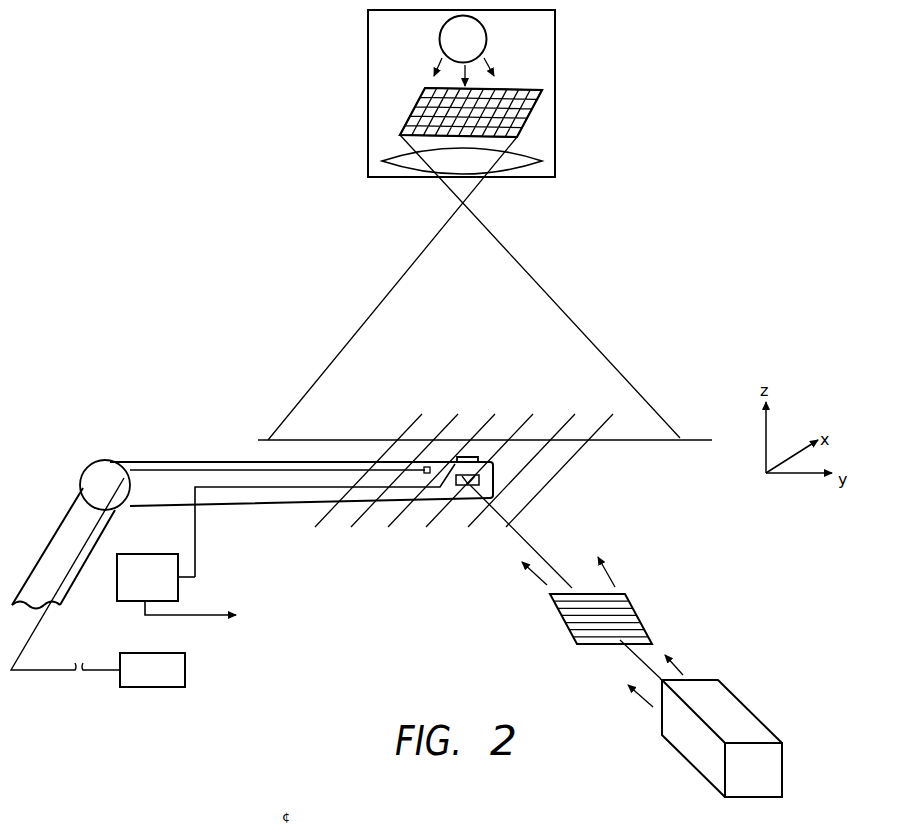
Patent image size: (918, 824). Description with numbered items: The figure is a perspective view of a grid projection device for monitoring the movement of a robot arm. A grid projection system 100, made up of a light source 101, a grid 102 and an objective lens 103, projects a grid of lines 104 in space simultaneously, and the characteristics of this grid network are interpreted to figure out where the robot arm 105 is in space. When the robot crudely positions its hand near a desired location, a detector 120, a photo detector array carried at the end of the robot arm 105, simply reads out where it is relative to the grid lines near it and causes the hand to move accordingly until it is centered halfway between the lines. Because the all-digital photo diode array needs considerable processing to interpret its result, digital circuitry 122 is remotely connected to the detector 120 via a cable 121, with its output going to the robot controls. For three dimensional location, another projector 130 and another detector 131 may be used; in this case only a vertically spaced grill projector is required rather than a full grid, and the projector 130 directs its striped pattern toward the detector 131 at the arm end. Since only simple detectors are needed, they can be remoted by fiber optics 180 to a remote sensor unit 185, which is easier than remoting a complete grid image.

The grid projection system 100 is at (555, 165).
The light source 101 is at (486, 34).
The grid 102 is at (542, 90).
The objective lens 103 is at (403, 163).
The grid of lines 104 is at (633, 441).
The robot arm 105 is at (168, 462).
The detector 120 is at (482, 455).
The cable 121 is at (195, 537).
The digital circuitry 122 is at (164, 590).
The projector 130 is at (742, 715).
The detector 131 is at (479, 479).
The fiber optics 180 is at (53, 671).
The remote sensor unit 185 is at (170, 681).